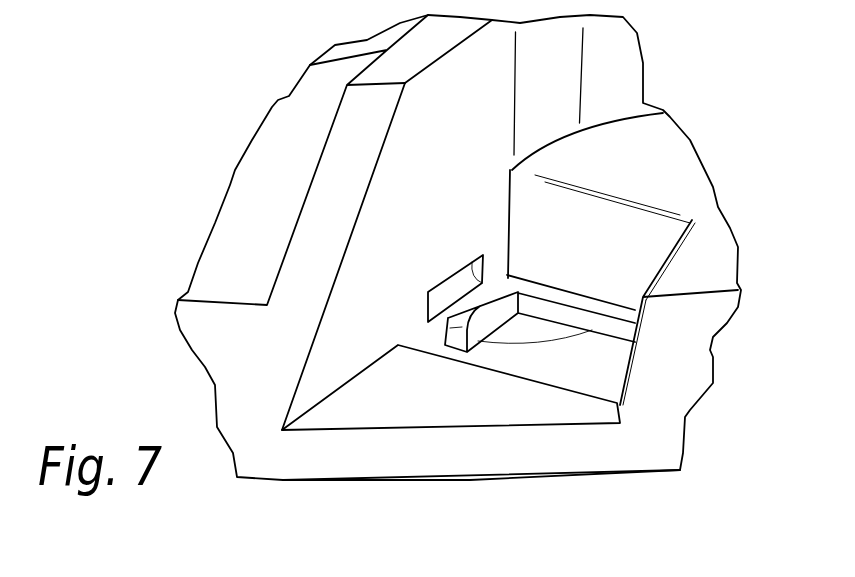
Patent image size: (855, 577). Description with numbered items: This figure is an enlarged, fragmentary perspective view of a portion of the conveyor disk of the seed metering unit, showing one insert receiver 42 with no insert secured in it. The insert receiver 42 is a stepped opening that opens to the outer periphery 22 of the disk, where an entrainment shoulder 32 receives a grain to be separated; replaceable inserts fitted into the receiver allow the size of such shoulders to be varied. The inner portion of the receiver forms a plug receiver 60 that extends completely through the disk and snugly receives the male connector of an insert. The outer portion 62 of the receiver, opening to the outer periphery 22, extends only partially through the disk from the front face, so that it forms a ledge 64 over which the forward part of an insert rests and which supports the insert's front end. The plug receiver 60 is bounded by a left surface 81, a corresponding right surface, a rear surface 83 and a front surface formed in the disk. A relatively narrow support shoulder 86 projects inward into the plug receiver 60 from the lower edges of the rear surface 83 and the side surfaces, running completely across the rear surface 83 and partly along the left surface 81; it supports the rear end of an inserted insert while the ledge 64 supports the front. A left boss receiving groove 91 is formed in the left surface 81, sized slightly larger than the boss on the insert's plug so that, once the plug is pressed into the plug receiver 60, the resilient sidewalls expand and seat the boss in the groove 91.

The outer periphery 22 is at (312, 457).
The entrainment shoulder 32 is at (317, 155).
The insert receiver 42 is at (653, 256).
The plug receiver 60 is at (596, 376).
The outer portion 62 is at (327, 352).
The ledge 64 is at (425, 393).
The left surface 81 is at (427, 183).
The rear surface 83 is at (585, 238).
The support shoulder 86 is at (590, 327).
The left boss receiving groove 91 is at (442, 300).